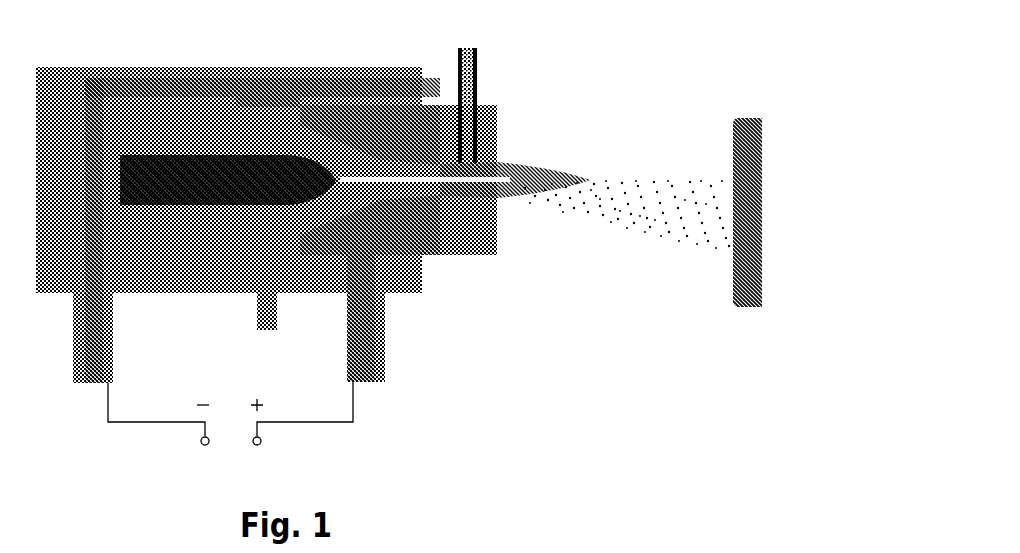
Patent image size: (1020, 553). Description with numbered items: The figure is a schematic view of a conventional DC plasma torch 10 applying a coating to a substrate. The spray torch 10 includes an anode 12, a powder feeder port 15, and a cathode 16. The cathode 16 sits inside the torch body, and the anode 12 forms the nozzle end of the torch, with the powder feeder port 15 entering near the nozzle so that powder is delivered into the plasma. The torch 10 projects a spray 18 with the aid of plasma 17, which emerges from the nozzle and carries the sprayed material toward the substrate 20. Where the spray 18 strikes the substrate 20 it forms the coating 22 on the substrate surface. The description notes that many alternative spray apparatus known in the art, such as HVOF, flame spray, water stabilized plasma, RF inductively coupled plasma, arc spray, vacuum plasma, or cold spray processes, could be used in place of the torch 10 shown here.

The DC plasma torch 10 is at (449, 367).
The anode 12 is at (478, 235).
The powder feeder port 15 is at (470, 52).
The cathode 16 is at (193, 155).
The plasma 17 is at (537, 168).
The spray 18 is at (662, 190).
The substrate 20 is at (755, 215).
The coating 22 is at (735, 153).